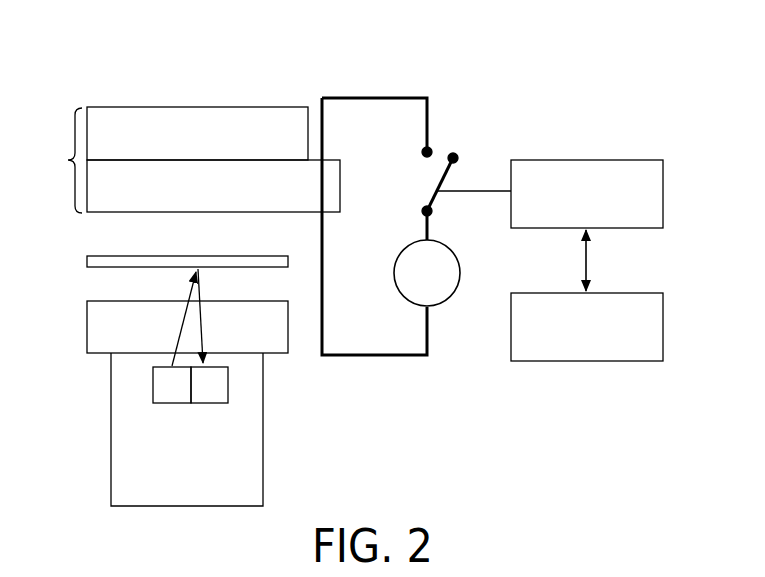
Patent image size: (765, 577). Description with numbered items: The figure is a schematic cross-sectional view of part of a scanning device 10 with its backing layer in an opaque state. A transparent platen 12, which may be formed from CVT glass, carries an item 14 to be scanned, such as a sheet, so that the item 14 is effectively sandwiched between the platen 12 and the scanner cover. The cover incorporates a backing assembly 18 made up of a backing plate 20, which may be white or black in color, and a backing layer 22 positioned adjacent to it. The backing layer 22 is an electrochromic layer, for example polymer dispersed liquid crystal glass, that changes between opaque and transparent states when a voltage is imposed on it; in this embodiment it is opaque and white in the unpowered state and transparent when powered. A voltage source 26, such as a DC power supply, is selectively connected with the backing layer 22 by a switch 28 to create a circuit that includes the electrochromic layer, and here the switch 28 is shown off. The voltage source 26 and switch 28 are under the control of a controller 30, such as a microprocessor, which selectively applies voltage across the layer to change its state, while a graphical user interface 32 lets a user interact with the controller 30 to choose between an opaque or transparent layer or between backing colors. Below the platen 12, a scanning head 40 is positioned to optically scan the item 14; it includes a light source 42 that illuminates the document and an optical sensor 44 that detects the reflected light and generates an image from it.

The scanning device 10 is at (226, 57).
The transparent platen 12 is at (83, 326).
The item 14 is at (83, 259).
The backing assembly 18 is at (214, 139).
The backing plate 20 is at (133, 97).
The backing layer 22 is at (310, 191).
The voltage source 26 is at (445, 310).
The switch 28 is at (446, 140).
The controller 30 is at (586, 155).
The graphical user interface 32 is at (586, 366).
The scanning head 40 is at (124, 425).
The light source 42 is at (164, 408).
The optical sensor 44 is at (216, 408).